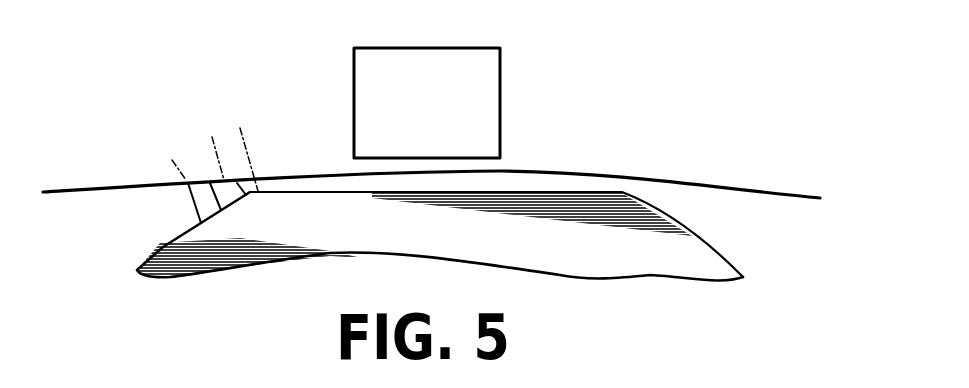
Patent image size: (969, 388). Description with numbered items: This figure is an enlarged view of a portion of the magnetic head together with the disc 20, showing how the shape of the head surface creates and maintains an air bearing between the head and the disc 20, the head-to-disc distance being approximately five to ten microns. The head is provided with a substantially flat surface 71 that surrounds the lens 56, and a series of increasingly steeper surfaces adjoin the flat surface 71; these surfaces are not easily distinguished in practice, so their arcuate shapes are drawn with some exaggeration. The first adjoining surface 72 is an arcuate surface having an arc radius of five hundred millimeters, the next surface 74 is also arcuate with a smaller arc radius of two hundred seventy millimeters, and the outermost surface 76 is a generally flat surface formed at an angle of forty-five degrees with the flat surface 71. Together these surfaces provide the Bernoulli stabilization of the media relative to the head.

The disc 20 is at (607, 171).
The lens 56 is at (482, 86).
The substantially flat surface 71 is at (463, 193).
The arcuate surface 72 is at (238, 180).
The arcuate surface 74 is at (207, 181).
The generally flat surface 76 is at (158, 248).